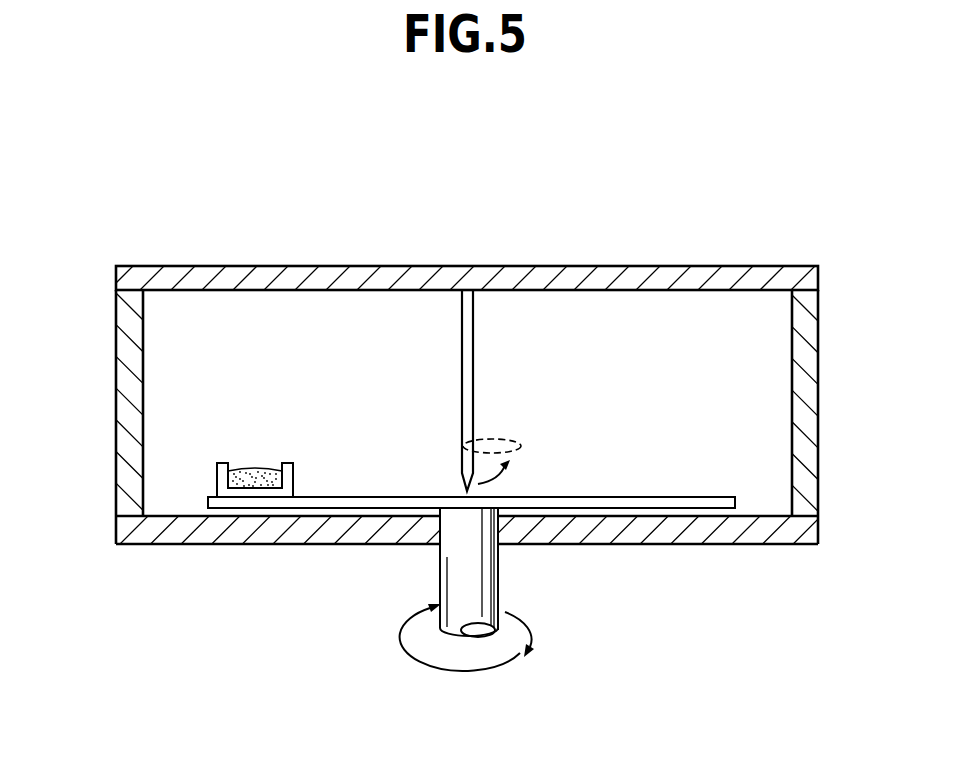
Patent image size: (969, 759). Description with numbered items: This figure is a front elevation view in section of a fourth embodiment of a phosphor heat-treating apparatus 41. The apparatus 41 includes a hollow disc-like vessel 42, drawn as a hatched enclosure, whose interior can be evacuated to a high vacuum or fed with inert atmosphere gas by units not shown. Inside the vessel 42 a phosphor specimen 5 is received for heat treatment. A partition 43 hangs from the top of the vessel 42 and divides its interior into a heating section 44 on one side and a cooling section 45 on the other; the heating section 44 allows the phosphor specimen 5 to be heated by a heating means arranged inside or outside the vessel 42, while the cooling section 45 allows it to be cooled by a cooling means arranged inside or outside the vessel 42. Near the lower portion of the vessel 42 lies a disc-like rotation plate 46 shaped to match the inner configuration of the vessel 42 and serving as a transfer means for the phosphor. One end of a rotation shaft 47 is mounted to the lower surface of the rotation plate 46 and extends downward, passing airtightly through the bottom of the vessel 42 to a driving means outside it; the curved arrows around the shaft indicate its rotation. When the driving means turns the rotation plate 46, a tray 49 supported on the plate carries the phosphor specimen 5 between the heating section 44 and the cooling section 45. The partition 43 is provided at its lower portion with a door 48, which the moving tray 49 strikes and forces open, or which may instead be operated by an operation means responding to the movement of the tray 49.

The phosphor heat-treating apparatus 41 is at (184, 232).
The vessel 42 is at (817, 311).
The partition 43 is at (474, 318).
The heating section 44 is at (350, 382).
The cooling section 45 is at (712, 399).
The rotation plate 46 is at (694, 506).
The rotation shaft 47 is at (477, 585).
The door 48 is at (497, 445).
The tray 49 is at (217, 478).
The phosphor specimen 5 is at (243, 467).